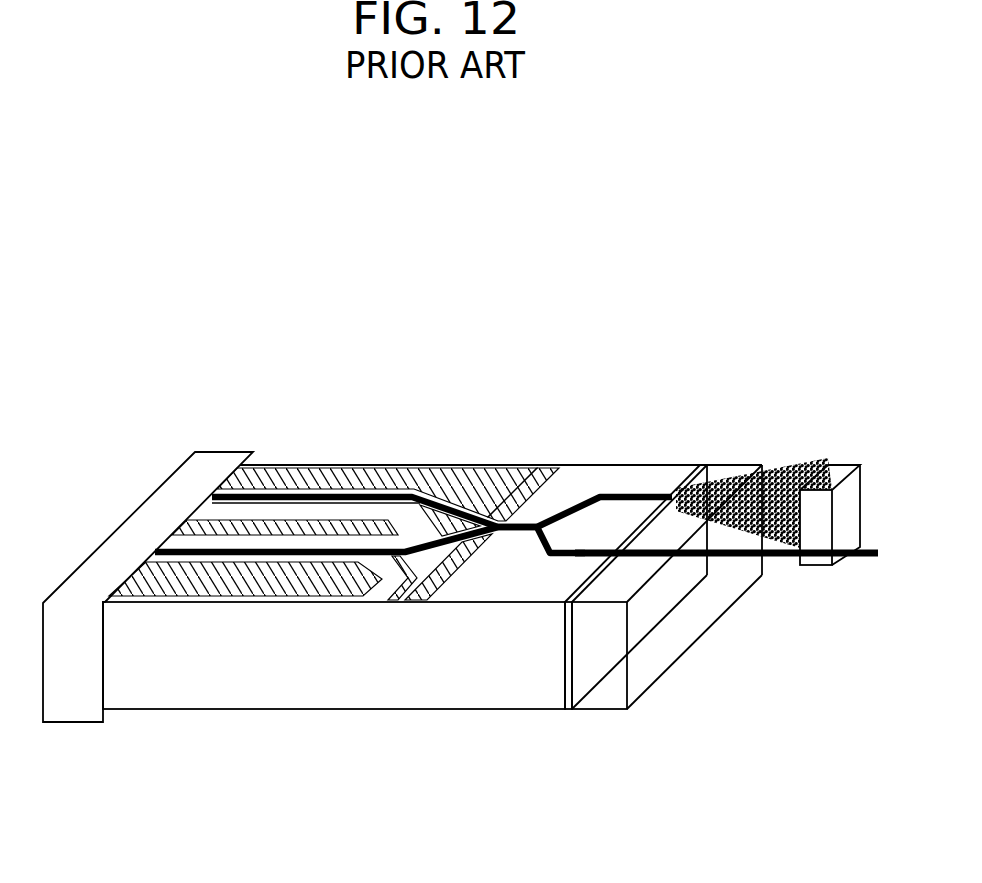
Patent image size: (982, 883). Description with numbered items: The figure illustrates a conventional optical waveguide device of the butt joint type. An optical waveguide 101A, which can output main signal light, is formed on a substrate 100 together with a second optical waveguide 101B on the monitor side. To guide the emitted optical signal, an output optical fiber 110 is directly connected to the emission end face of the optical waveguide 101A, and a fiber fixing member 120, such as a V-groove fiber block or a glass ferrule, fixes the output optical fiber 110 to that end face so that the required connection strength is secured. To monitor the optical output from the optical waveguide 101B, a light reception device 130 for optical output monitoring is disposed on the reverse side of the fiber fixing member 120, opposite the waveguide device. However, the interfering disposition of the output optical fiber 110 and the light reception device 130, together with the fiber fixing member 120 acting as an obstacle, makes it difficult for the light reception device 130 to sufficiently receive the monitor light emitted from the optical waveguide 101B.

The substrate 100 is at (218, 685).
The optical waveguide 101A is at (578, 548).
The optical waveguide 101B is at (641, 498).
The output optical fiber 110 is at (777, 557).
The fiber fixing member 120 is at (733, 470).
The light reception device 130 is at (843, 465).